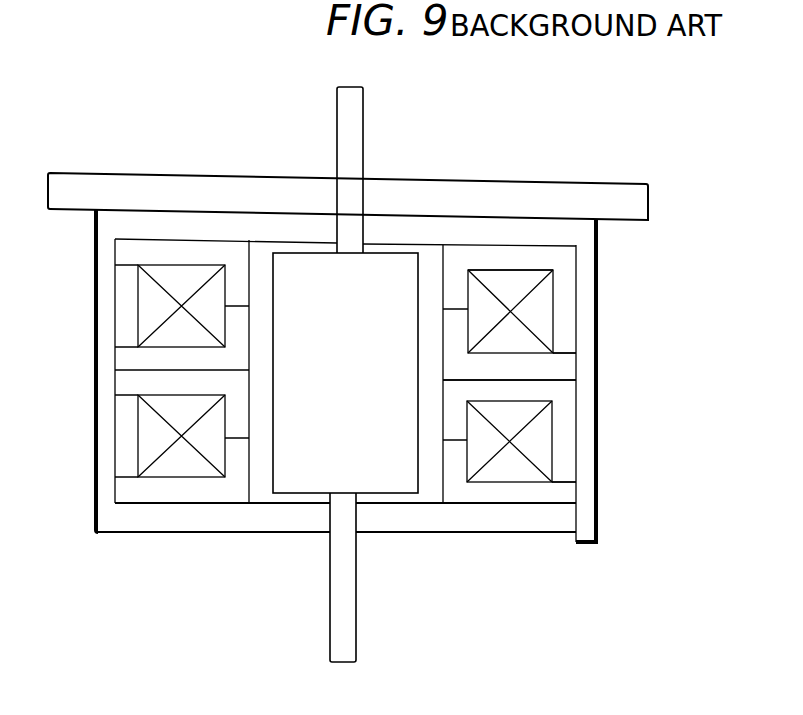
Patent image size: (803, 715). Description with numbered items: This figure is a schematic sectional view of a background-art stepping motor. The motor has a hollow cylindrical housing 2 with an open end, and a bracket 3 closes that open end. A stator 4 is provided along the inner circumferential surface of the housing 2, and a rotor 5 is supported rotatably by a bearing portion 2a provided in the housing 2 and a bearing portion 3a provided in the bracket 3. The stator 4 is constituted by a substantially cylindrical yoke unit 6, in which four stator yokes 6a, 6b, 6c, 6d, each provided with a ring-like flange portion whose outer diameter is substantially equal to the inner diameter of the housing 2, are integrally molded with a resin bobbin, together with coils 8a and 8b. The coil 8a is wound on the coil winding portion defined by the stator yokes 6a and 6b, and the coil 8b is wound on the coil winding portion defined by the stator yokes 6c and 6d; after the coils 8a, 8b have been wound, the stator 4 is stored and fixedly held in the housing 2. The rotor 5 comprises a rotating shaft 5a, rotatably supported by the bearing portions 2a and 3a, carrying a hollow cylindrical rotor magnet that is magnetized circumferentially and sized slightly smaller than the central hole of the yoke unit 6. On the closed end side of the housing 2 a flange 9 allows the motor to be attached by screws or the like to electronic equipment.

The housing 2 is at (583, 532).
The bearing portion 2a is at (364, 227).
The bracket 3 is at (543, 530).
The bearing portion 3a is at (328, 517).
The stator 4 is at (429, 494).
The rotor 5 is at (285, 240).
The rotating shaft 5a is at (365, 100).
The yoke unit 6 is at (690, 250).
The stator yoke 6a is at (573, 263).
The stator yoke 6b is at (573, 367).
The stator yoke 6c is at (572, 392).
The stator yoke 6d is at (568, 497).
The coil 8a is at (153, 313).
The coil 8b is at (150, 437).
The flange 9 is at (601, 183).